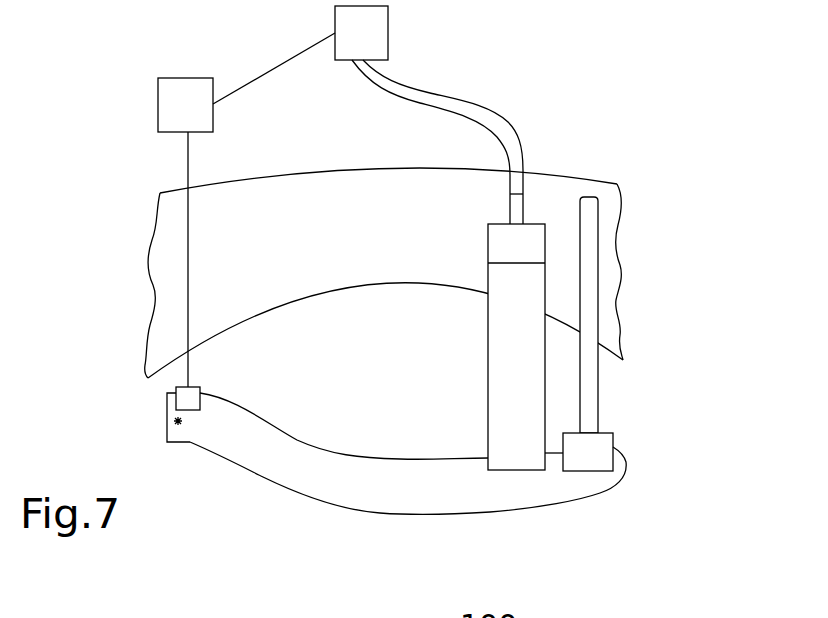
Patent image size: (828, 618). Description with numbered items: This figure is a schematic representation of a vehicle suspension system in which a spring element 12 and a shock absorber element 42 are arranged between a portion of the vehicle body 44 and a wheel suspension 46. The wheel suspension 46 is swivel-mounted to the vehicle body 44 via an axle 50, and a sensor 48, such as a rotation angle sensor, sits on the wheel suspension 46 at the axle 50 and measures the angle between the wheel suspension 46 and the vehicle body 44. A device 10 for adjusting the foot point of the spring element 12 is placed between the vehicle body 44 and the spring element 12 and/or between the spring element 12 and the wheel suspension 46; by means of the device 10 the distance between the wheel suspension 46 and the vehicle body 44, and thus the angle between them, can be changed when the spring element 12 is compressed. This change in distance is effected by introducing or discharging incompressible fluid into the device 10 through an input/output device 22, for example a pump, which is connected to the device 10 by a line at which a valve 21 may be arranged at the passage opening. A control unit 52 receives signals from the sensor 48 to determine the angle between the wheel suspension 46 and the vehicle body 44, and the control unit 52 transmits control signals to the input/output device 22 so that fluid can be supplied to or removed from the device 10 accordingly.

The device 10 is at (540, 223).
The spring element 12 is at (523, 393).
The valve 21 is at (515, 207).
The input/output device 22 is at (373, 36).
The shock absorber element 42 is at (590, 381).
The vehicle body 44 is at (283, 193).
The wheel suspension 46 is at (475, 500).
The sensor 48 is at (187, 397).
The axle 50 is at (180, 424).
The control unit 52 is at (172, 108).